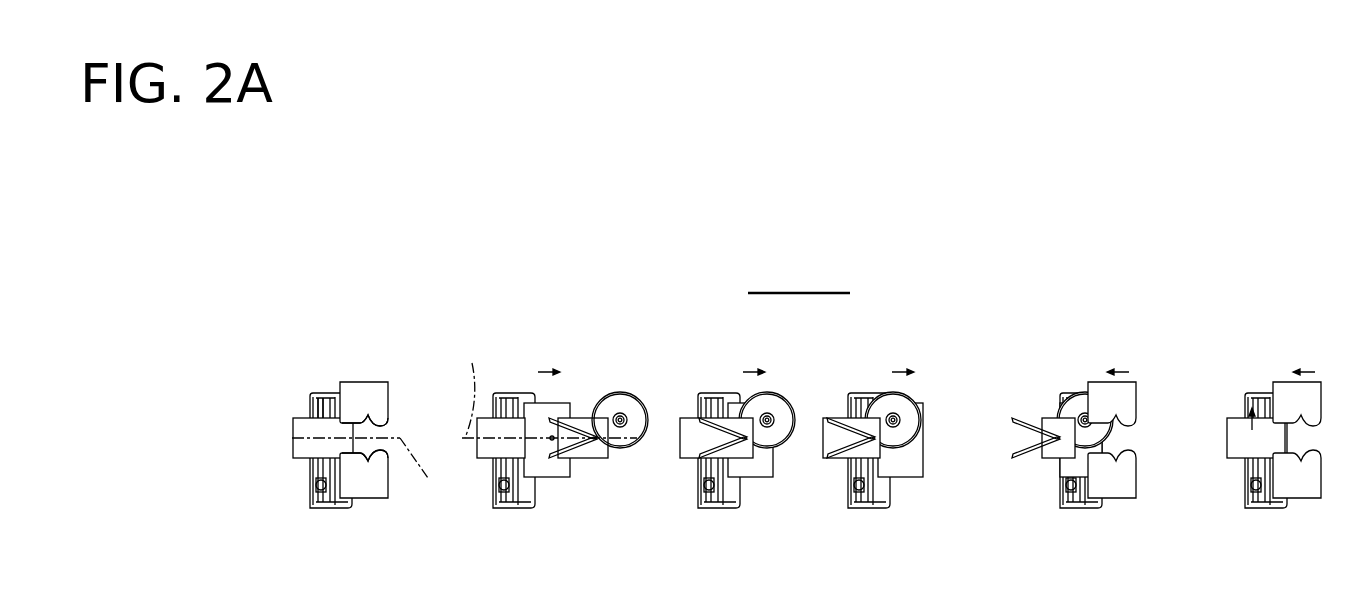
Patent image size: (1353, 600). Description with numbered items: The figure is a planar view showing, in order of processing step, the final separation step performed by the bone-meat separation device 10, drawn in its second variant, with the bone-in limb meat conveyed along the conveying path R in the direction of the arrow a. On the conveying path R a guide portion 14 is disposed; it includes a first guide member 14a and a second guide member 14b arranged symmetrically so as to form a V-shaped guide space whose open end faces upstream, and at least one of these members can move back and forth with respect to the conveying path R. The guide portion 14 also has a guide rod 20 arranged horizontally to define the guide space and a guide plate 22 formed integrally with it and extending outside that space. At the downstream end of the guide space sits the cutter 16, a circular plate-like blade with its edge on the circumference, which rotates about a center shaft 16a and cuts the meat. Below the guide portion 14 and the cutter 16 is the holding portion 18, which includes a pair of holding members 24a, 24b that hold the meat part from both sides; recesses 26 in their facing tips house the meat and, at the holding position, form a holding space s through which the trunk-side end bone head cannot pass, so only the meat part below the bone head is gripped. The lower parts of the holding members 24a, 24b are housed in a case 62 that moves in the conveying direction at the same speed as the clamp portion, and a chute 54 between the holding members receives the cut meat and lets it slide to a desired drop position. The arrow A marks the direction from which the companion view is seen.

The bone-meat separation device 10 is at (763, 383).
The guide portion 14 is at (577, 406).
The first guide member 14a is at (590, 458).
The second guide member 14b is at (563, 420).
The cutter 16 is at (630, 447).
The center shaft 16a is at (618, 414).
The holding portion 18 is at (313, 376).
The guide rod 20 is at (688, 418).
The guide plate 22 is at (732, 425).
The holding member 24a is at (373, 495).
The holding member 24b is at (388, 400).
The recess 26 is at (380, 427).
The chute 54 is at (293, 450).
The case 62 is at (313, 396).
The arrow A is at (321, 437).
The conveying path R is at (441, 421).
The arrow a is at (380, 372).
The holding space s is at (552, 441).